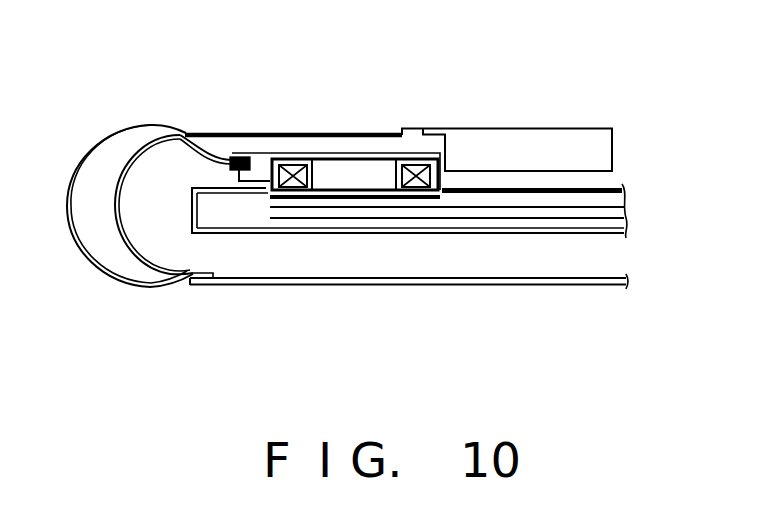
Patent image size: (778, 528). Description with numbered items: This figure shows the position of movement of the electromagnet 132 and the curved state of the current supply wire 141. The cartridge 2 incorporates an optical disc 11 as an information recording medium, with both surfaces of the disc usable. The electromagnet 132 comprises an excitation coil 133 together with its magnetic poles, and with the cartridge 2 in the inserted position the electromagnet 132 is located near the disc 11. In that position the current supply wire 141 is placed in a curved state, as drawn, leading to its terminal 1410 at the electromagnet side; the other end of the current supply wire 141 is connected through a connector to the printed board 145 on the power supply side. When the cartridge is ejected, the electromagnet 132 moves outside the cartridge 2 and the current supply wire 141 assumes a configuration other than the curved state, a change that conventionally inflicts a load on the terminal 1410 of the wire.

The current supply wire 141 is at (133, 127).
The terminal of the current supply wire 1410 is at (244, 157).
The excitation coil 133 is at (294, 165).
The electromagnet 132 is at (355, 172).
The cartridge 2 is at (468, 233).
The optical disc 11 is at (562, 208).
The printed board 145 is at (343, 286).